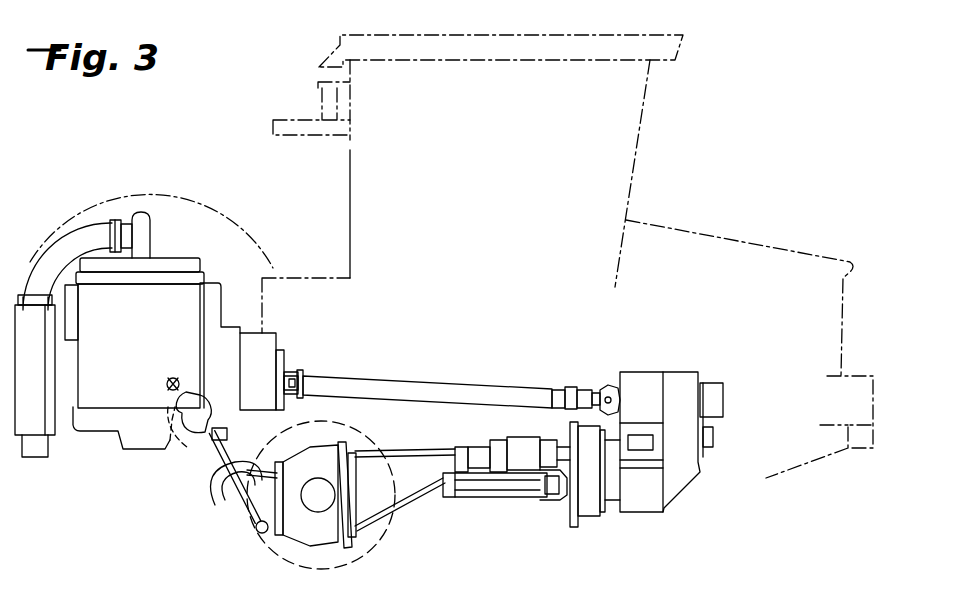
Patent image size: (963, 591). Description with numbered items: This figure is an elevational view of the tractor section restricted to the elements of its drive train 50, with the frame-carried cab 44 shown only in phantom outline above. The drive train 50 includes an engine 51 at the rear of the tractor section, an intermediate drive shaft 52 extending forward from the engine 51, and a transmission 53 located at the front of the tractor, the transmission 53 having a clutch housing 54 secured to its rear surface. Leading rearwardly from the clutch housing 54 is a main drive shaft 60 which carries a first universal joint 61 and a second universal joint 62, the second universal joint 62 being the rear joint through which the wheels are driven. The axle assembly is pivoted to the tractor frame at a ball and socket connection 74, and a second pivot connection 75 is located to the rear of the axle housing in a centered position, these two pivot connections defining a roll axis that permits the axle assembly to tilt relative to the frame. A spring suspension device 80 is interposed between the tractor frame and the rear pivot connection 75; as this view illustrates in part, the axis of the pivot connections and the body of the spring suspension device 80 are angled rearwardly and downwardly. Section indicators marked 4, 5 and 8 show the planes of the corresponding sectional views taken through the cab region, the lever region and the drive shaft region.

The cab 44 is at (638, 147).
The engine 51 is at (178, 292).
The drive train 50 is at (343, 346).
The intermediate drive shaft 52 is at (385, 378).
The transmission 53 is at (642, 378).
The clutch housing 54 is at (582, 525).
The main drive shaft 60 is at (462, 496).
The first universal joint 61 is at (542, 500).
The second universal joint 62 is at (414, 487).
The ball and socket connection 74 is at (478, 452).
The second pivot connection 75 is at (237, 497).
The spring suspension device 80 is at (193, 462).
The section line 5- 5 is at (140, 440).
The section line 8- 8 is at (228, 442).
The section line 4- 4 is at (704, 272).